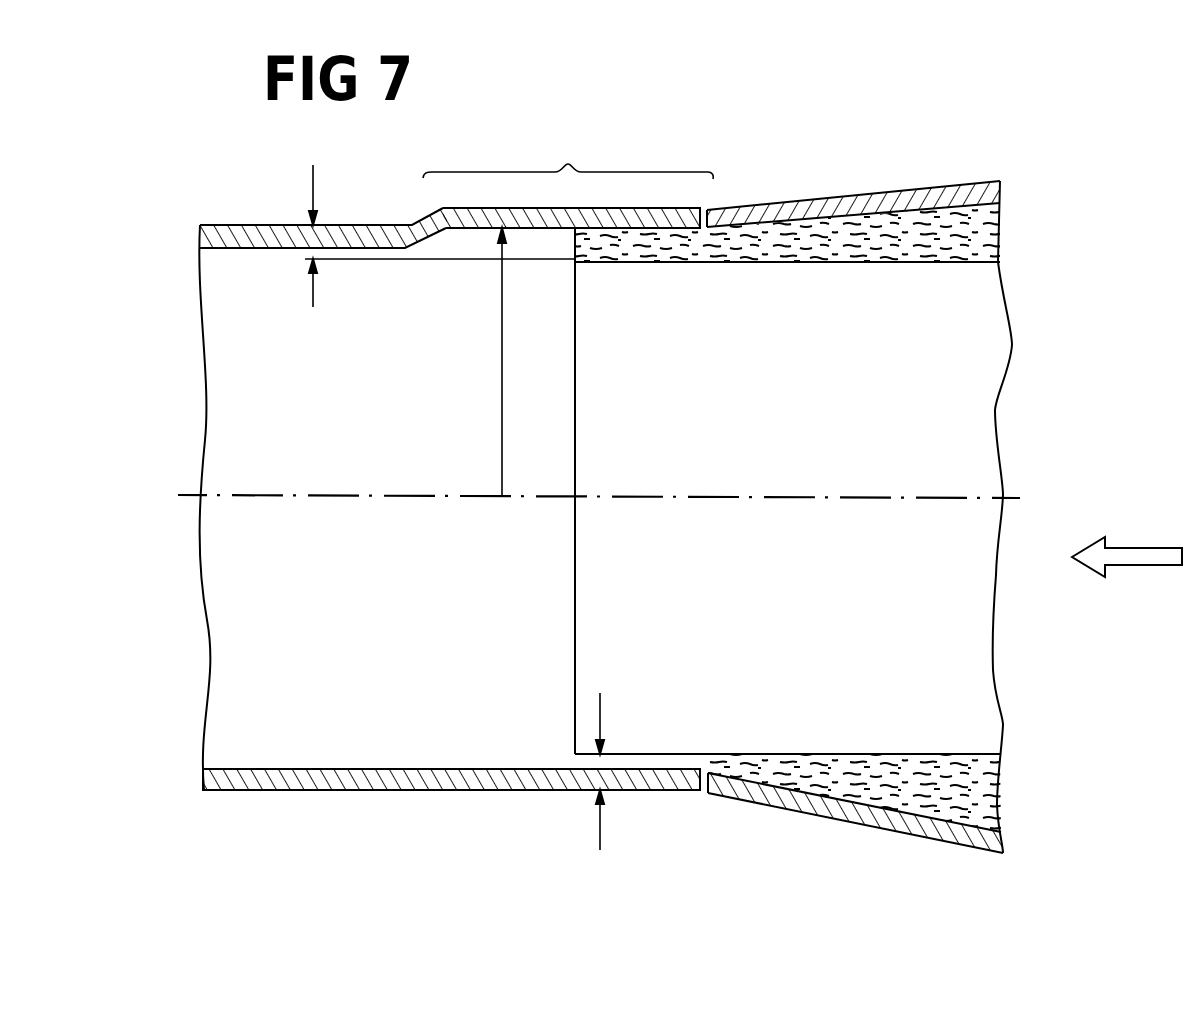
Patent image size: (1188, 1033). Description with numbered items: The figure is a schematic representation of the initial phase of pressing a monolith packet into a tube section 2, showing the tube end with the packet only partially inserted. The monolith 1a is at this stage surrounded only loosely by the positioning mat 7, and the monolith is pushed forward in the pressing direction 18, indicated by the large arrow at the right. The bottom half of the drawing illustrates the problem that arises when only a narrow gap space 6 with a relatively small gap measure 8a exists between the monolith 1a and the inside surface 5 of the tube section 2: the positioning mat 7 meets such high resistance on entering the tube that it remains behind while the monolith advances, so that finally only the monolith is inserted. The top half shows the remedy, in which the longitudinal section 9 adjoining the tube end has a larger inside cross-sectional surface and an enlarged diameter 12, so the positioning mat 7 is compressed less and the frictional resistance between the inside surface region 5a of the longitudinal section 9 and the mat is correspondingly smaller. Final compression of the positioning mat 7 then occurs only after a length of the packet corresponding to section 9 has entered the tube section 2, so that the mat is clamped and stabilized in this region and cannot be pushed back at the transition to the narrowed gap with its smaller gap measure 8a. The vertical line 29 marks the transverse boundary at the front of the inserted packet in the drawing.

The monolith 1a is at (925, 672).
The tube section 2 is at (381, 778).
The inside surface 5 is at (318, 767).
The inside surface region 5a is at (530, 231).
The gap space 6 is at (628, 766).
The positioning mat 7 is at (850, 240).
The gap measure 8a is at (310, 259).
The longitudinal section 9 is at (568, 145).
The diameter 12 is at (500, 424).
The pressing direction 18 is at (1148, 555).
The transverse partition line 29 is at (625, 606).